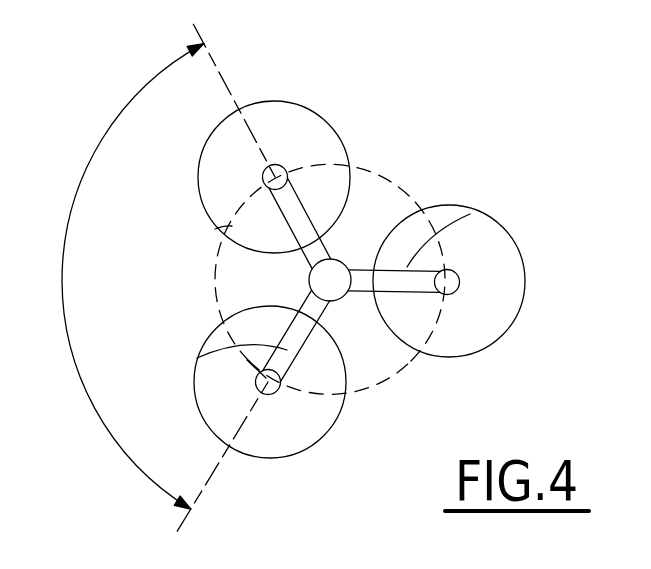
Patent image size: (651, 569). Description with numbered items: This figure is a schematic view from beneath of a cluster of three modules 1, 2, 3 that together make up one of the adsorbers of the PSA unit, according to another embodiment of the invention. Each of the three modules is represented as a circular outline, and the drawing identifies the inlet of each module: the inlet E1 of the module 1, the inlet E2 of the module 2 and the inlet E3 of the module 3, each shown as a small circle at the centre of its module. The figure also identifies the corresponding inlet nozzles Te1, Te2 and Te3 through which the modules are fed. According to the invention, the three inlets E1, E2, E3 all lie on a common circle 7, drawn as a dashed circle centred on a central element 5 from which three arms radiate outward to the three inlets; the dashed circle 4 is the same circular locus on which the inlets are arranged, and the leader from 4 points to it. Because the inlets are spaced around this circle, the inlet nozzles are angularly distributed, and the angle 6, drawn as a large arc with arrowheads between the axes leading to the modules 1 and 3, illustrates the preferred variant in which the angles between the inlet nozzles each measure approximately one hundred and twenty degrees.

The module 1 is at (318, 112).
The module 2 is at (437, 203).
The module 3 is at (328, 428).
The circular path of axes 4 is at (348, 266).
The central hub 5 is at (328, 281).
The angle 6 is at (78, 377).
The circle 7 is at (377, 390).
The inlet E1 is at (274, 164).
The inlet E2 is at (450, 283).
The inlet E3 is at (267, 394).
The inlet nozzle Te1 is at (215, 229).
The inlet nozzle Te2 is at (470, 214).
The inlet nozzle Te3 is at (197, 358).